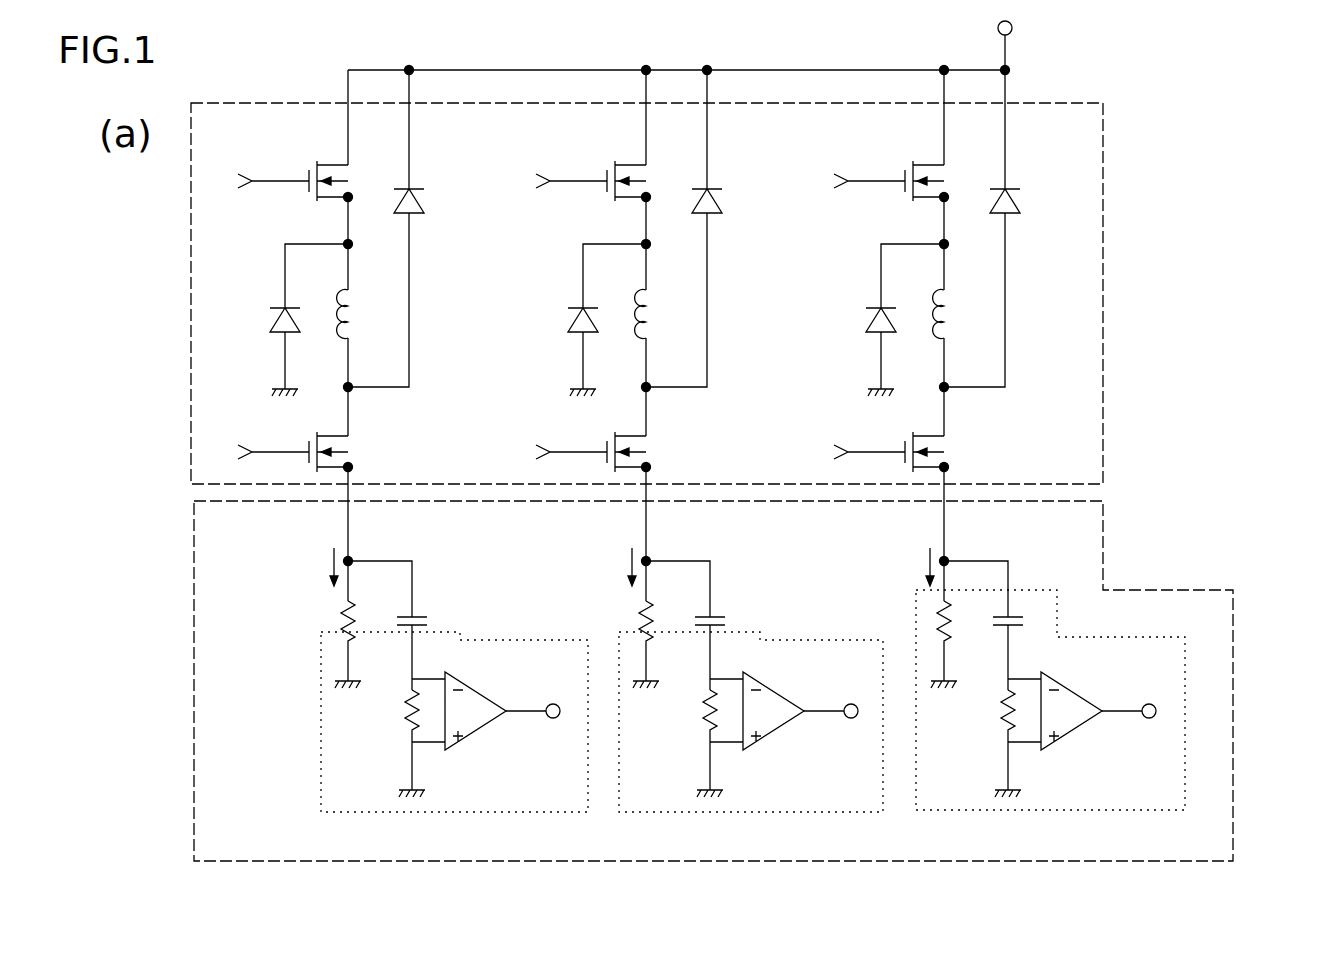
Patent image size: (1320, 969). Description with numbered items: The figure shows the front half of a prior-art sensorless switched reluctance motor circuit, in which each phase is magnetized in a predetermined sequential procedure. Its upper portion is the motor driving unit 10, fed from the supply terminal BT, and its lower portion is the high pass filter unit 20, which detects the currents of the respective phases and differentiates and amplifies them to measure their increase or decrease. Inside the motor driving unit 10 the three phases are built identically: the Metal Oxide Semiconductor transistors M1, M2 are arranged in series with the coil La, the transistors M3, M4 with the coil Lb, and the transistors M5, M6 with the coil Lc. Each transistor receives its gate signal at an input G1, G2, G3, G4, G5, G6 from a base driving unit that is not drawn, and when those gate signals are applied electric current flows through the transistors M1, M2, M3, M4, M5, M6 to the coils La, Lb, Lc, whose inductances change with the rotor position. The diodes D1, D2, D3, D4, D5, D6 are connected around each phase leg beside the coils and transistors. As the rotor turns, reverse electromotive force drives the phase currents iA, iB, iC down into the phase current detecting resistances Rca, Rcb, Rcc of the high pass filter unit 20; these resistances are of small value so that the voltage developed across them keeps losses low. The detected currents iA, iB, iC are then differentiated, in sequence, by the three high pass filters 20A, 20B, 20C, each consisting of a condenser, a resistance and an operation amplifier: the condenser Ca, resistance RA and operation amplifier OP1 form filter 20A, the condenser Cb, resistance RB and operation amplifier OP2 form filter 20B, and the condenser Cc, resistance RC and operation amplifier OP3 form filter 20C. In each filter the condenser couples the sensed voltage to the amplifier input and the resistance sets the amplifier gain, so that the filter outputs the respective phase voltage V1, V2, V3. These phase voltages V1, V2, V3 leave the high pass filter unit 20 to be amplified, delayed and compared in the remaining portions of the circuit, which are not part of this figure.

The motor driving unit 10 is at (1103, 225).
The high pass filter unit 20 is at (1103, 537).
The high pass filter 20A is at (588, 812).
The high pass filter 20B is at (825, 764).
The high pass filter 20C is at (1115, 734).
The battery terminal BT is at (1022, 40).
The Metal Oxide Semiconductor transistor M1 is at (350, 181).
The Metal Oxide Semiconductor transistor M2 is at (350, 452).
The Metal Oxide Semiconductor transistor M3 is at (648, 181).
The Metal Oxide Semiconductor transistor M4 is at (648, 452).
The Metal Oxide Semiconductor transistor M5 is at (946, 181).
The Metal Oxide Semiconductor transistor M6 is at (946, 452).
The diode D1 is at (292, 320).
The diode D2 is at (405, 228).
The diode D3 is at (590, 320).
The diode D4 is at (703, 228).
The diode D5 is at (888, 320).
The diode D6 is at (1001, 228).
The coil La is at (361, 314).
The coil Lb is at (660, 314).
The coil Lc is at (957, 314).
The gate input 1 G1 is at (256, 182).
The gate input 2 G2 is at (256, 453).
The gate input 3 G3 is at (554, 182).
The gate input 4 G4 is at (554, 453).
The gate input 5 G5 is at (852, 182).
The gate input 6 G6 is at (852, 453).
The current iA is at (319, 572).
The current iB is at (617, 572).
The current iC is at (915, 572).
The phase current detecting resistance Rca is at (368, 644).
The phase current detecting resistance Rcb is at (666, 644).
The phase current detecting resistance Rcc is at (963, 644).
The condenser Ca is at (400, 625).
The condenser Cb is at (699, 625).
The condenser Cc is at (996, 625).
The resistance RA is at (397, 743).
The resistance RB is at (695, 743).
The resistance RC is at (993, 743).
The operation amplifier OP1 is at (482, 720).
The operation amplifier OP2 is at (780, 720).
The operation amplifier OP3 is at (1078, 720).
The phase voltage V1 is at (542, 696).
The phase voltage V2 is at (840, 696).
The phase voltage V3 is at (1138, 696).